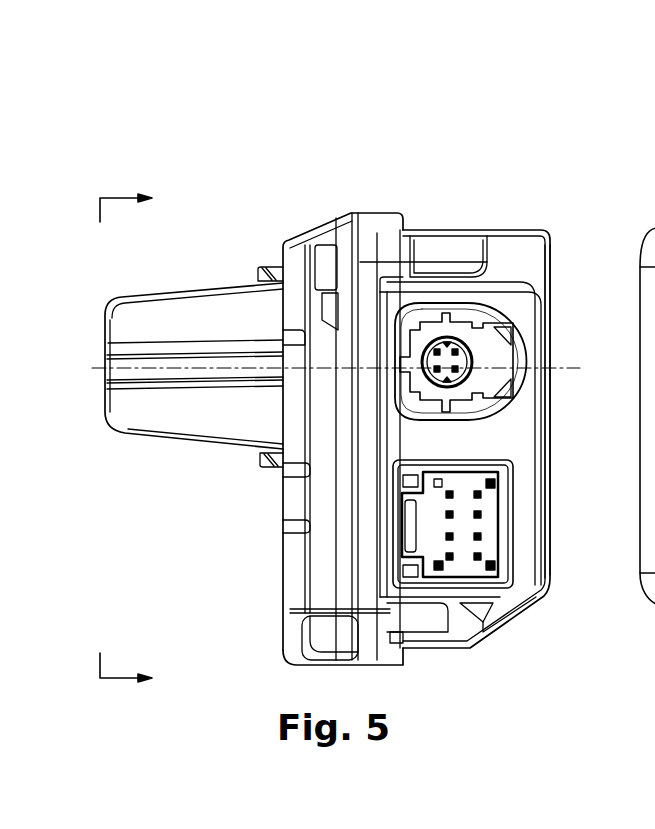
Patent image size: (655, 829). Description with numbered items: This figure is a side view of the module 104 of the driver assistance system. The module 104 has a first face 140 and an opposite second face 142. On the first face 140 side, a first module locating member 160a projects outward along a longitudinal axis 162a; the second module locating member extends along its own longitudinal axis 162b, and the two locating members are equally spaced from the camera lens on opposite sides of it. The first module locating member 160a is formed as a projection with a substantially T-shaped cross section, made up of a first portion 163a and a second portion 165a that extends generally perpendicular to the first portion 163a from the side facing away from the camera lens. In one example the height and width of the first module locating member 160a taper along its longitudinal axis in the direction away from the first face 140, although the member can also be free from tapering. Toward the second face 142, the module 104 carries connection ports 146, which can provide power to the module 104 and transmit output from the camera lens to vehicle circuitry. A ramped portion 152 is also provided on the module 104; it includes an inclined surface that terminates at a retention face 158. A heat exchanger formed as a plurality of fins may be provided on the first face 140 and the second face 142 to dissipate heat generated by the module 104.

The module 104 is at (318, 130).
The first face 140 is at (242, 217).
The second face 142 is at (541, 604).
The connection ports 146 is at (485, 337).
The ramped portion 152 is at (376, 186).
The retention face 158 is at (410, 214).
The first module locating member 160a is at (178, 291).
The longitudinal axis 162a is at (552, 368).
The longitudinal axis 162b is at (587, 411).
The first portion 163a is at (165, 405).
The second portion 165a is at (120, 365).